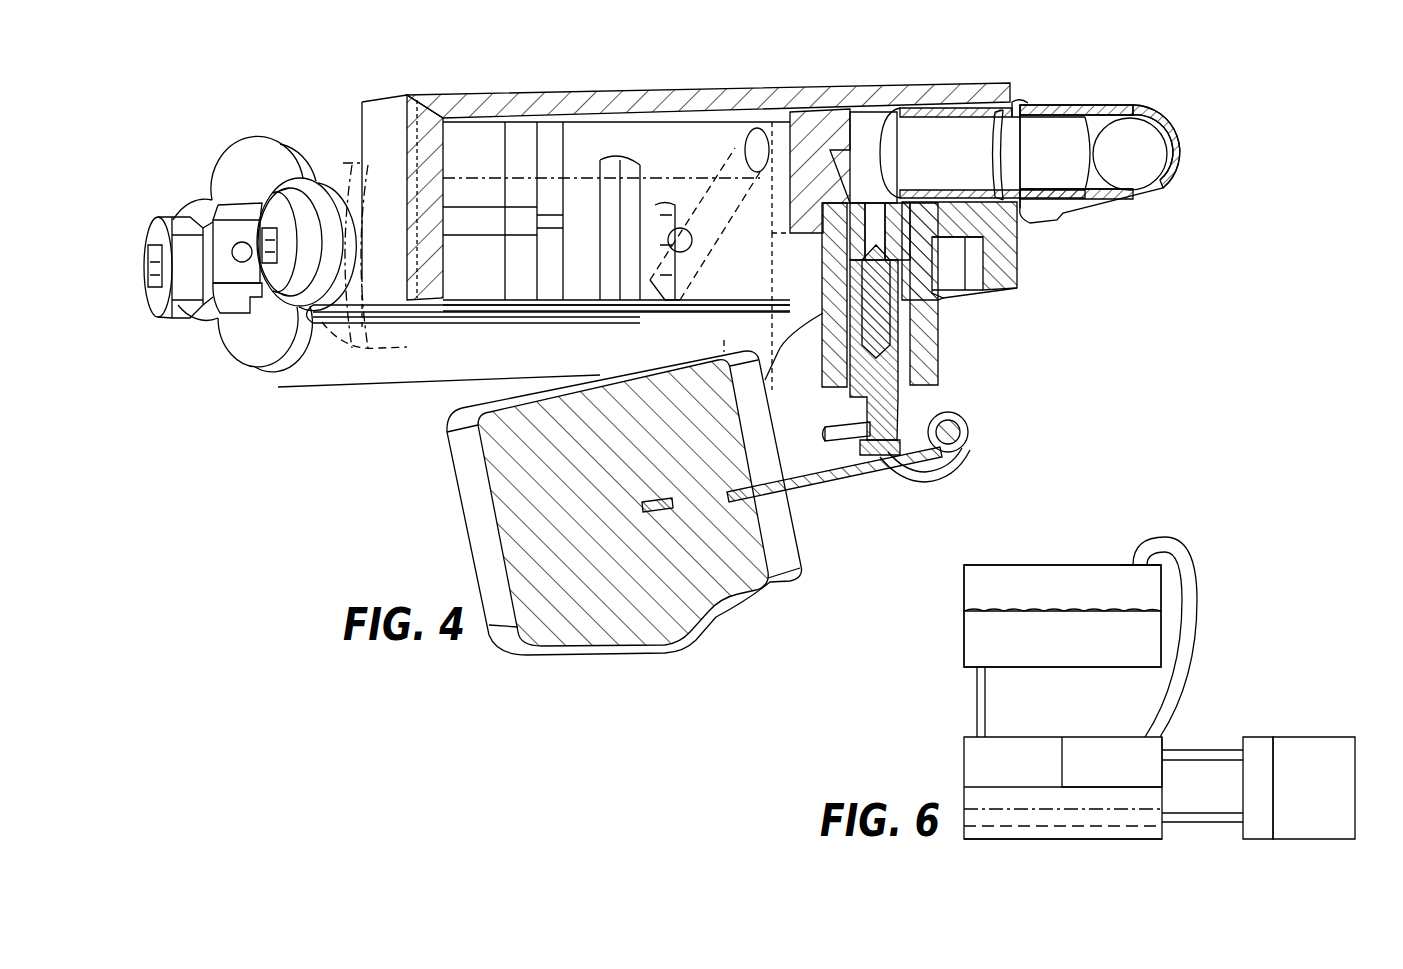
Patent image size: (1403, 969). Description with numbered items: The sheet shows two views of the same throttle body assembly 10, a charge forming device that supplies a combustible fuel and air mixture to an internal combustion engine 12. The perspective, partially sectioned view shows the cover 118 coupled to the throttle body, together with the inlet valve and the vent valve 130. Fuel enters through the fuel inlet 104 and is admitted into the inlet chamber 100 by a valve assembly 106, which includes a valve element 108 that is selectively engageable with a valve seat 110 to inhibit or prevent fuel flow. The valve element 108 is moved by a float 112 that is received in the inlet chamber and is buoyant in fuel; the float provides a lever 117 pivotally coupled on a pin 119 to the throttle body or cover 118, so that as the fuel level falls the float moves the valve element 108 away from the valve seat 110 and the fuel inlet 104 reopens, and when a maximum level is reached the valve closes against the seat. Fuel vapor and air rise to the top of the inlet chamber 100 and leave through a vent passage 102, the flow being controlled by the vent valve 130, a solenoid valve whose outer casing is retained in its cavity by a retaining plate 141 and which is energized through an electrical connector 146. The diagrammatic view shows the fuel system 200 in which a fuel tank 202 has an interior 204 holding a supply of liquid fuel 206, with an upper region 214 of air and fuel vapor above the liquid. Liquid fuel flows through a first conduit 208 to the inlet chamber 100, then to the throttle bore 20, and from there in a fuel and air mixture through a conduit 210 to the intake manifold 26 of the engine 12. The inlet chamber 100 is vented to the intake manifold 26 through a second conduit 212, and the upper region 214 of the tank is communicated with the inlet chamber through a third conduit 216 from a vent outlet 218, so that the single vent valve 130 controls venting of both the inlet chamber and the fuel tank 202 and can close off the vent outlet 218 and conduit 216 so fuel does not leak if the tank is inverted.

In FIG. 4, the vent valve 130 is at (216, 133).
In FIG. 6, the vent valve 130 is at (1091, 755).
In FIG. 4, the retaining plate 141 is at (281, 152).
In FIG. 4, the electrical connector 146 is at (196, 275).
In FIG. 4, the cover 118 is at (651, 88).
In FIG. 4, the vent passage 102 is at (760, 132).
In FIG. 4, the fuel inlet 104 is at (885, 122).
In FIG. 4, the valve seat 110 is at (915, 262).
In FIG. 4, the valve element 108 is at (892, 368).
In FIG. 4, the pin 119 is at (957, 424).
In FIG. 4, the valve assembly 106 is at (950, 466).
In FIG. 4, the lever 117 is at (808, 486).
In FIG. 4, the float 112 is at (575, 648).
In FIG. 6, the fuel system 200 is at (1282, 598).
In FIG. 6, the fuel tank 202 is at (1128, 550).
In FIG. 6, the upper region 214 is at (1027, 578).
In FIG. 6, the third conduit 216 is at (1190, 565).
In FIG. 6, the vent outlet 218 is at (1137, 567).
In FIG. 6, the interior 204 is at (964, 640).
In FIG. 6, the liquid fuel 206 is at (1086, 650).
In FIG. 6, the first conduit 208 is at (975, 697).
In FIG. 6, the inlet chamber 100 is at (975, 768).
In FIG. 6, the second conduit 212 is at (1200, 750).
In FIG. 6, the conduit 210 is at (1205, 825).
In FIG. 6, the intake manifold 26 is at (1262, 757).
In FIG. 6, the internal combustion engine 12 is at (1316, 755).
In FIG. 6, the throttle body assembly 10 is at (1010, 852).
In FIG. 6, the throttle bore 20 is at (1090, 832).